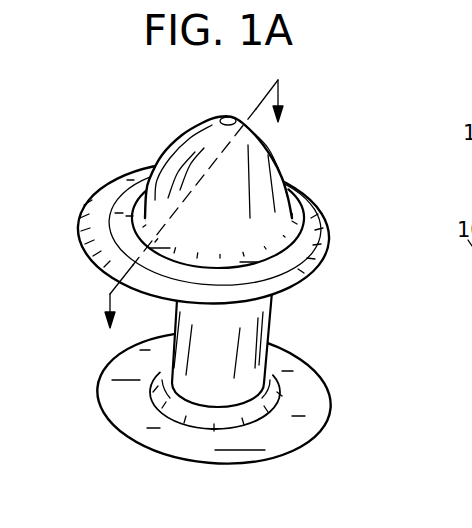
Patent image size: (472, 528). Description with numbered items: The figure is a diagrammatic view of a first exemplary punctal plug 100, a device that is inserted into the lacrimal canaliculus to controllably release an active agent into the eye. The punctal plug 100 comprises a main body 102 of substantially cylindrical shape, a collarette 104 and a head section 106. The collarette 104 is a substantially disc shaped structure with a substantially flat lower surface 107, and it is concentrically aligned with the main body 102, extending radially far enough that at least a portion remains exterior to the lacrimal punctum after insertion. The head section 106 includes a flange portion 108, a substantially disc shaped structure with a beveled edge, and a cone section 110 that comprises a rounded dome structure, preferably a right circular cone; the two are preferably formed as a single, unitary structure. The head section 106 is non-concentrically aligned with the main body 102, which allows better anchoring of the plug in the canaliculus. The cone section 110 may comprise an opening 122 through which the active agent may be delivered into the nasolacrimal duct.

The punctal plug 100 is at (132, 135).
The main body 102 is at (272, 302).
The collarette 104 is at (330, 389).
The head section 106 is at (347, 131).
The lower surface 107 is at (284, 437).
The flange portion 108 is at (77, 231).
The cone section 110 is at (284, 157).
The opening 122 is at (228, 117).